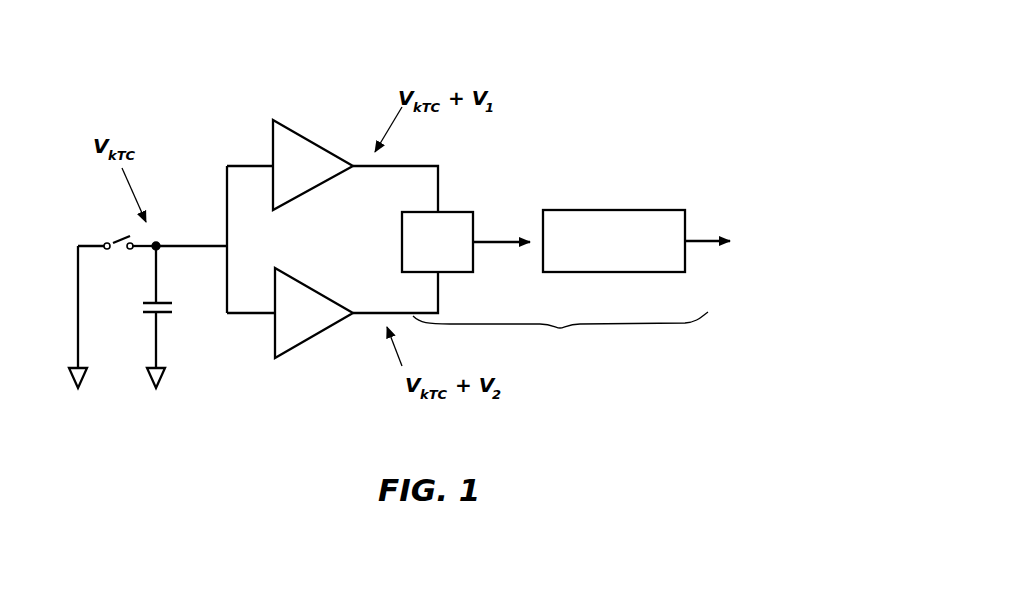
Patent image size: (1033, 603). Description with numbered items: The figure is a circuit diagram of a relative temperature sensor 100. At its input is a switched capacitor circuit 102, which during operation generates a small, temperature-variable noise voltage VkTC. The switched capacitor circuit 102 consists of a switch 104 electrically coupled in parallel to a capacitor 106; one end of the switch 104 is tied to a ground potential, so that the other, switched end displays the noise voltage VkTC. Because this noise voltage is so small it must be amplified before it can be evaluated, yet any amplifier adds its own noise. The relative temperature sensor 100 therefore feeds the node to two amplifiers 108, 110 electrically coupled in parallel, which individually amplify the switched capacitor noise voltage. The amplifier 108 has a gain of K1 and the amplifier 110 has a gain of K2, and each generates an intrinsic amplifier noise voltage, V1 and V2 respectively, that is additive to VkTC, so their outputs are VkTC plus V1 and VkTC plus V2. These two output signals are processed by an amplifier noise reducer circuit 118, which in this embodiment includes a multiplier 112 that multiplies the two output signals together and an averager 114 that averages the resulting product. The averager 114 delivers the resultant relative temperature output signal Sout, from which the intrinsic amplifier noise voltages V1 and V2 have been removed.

The relative temperature sensor 100 is at (604, 96).
The switched capacitor circuit 102 is at (170, 192).
The switch 104 is at (115, 240).
The capacitor 106 is at (163, 313).
The amplifier 108 is at (292, 125).
The amplifier 110 is at (305, 343).
The multiplier 112 is at (455, 206).
The averager 114 is at (573, 210).
The amplifier noise reducer circuit 118 is at (560, 335).